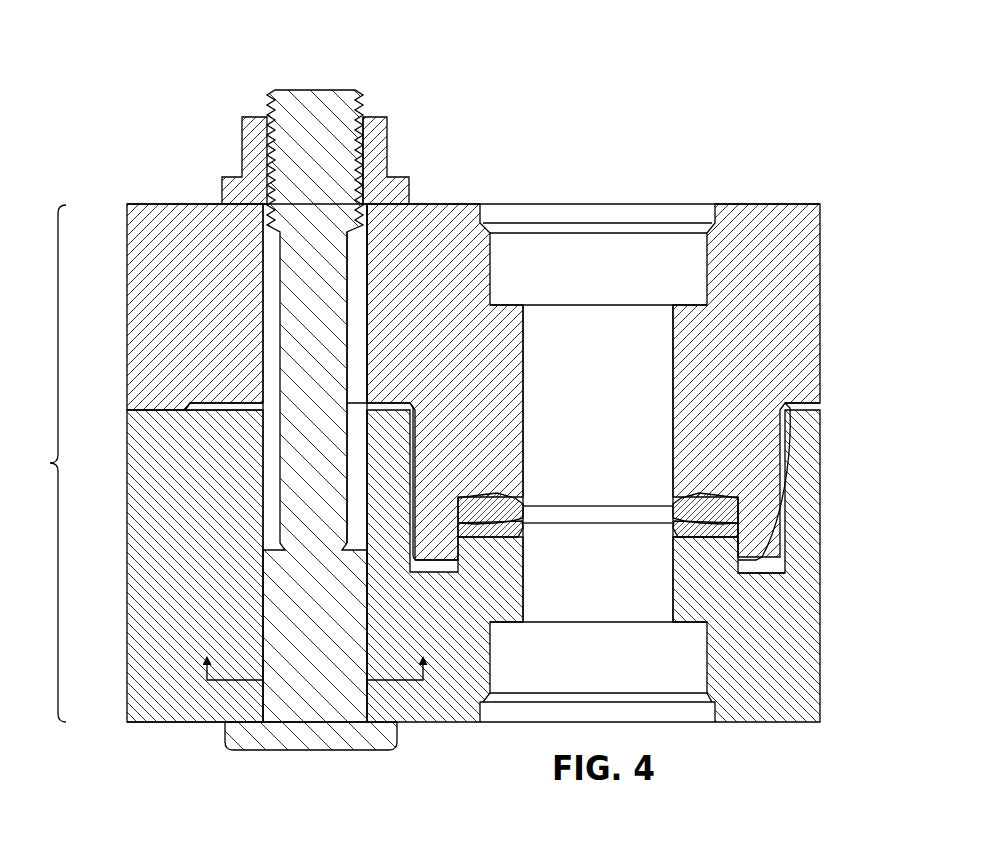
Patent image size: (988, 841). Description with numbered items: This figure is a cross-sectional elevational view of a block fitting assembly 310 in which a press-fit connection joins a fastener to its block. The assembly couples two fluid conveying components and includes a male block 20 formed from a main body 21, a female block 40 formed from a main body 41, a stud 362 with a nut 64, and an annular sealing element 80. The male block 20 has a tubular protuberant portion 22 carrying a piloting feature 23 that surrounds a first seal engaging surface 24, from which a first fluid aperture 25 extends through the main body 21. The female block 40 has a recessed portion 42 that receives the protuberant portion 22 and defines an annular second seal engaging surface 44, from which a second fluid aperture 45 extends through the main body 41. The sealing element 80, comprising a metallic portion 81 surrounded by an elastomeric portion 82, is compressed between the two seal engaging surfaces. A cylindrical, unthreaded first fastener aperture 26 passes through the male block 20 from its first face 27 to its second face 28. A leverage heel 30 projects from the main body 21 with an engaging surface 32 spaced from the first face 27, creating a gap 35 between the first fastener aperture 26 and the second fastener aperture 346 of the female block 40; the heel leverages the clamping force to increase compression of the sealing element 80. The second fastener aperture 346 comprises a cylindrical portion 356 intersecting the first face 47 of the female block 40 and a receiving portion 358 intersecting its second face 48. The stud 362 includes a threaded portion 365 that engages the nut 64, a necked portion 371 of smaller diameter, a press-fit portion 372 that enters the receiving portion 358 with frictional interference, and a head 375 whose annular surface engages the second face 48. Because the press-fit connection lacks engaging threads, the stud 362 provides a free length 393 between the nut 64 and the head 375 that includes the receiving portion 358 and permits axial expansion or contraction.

The block fitting assembly 310 is at (767, 110).
The male block 20 is at (800, 240).
The main body 21 is at (527, 382).
The second face 28 is at (787, 204).
The first fluid aperture 25 is at (616, 344).
The female block 40 is at (800, 608).
The main body 41 is at (526, 566).
The second face 48 is at (170, 723).
The second fluid aperture 45 is at (618, 601).
The stud 362 is at (338, 90).
The threaded portion 365 is at (369, 131).
The nut 64 is at (380, 165).
The head 375 is at (403, 745).
The receiving portion 358 is at (365, 621).
The press-fit portion 372 is at (268, 620).
The first fastener aperture 26 is at (356, 255).
The necked portion 371 is at (368, 327).
The second fastener aperture 346 is at (367, 470).
The cylindrical portion 356 is at (367, 526).
The gap 35 is at (238, 403).
The first face 47 is at (157, 410).
The leverage heel 30 is at (140, 412).
The engaging surface 32 is at (173, 412).
The protuberant portion 22 is at (777, 493).
The first face 27 is at (813, 413).
The piloting feature 23 is at (783, 566).
The first seal engaging surface 24 is at (684, 512).
The sealing element 80 is at (598, 513).
The metallic portion 81 is at (515, 517).
The elastomeric portion 82 is at (508, 540).
The second seal engaging surface 44 is at (702, 530).
The recessed portion 42 is at (757, 553).
The free length 393 is at (39, 463).